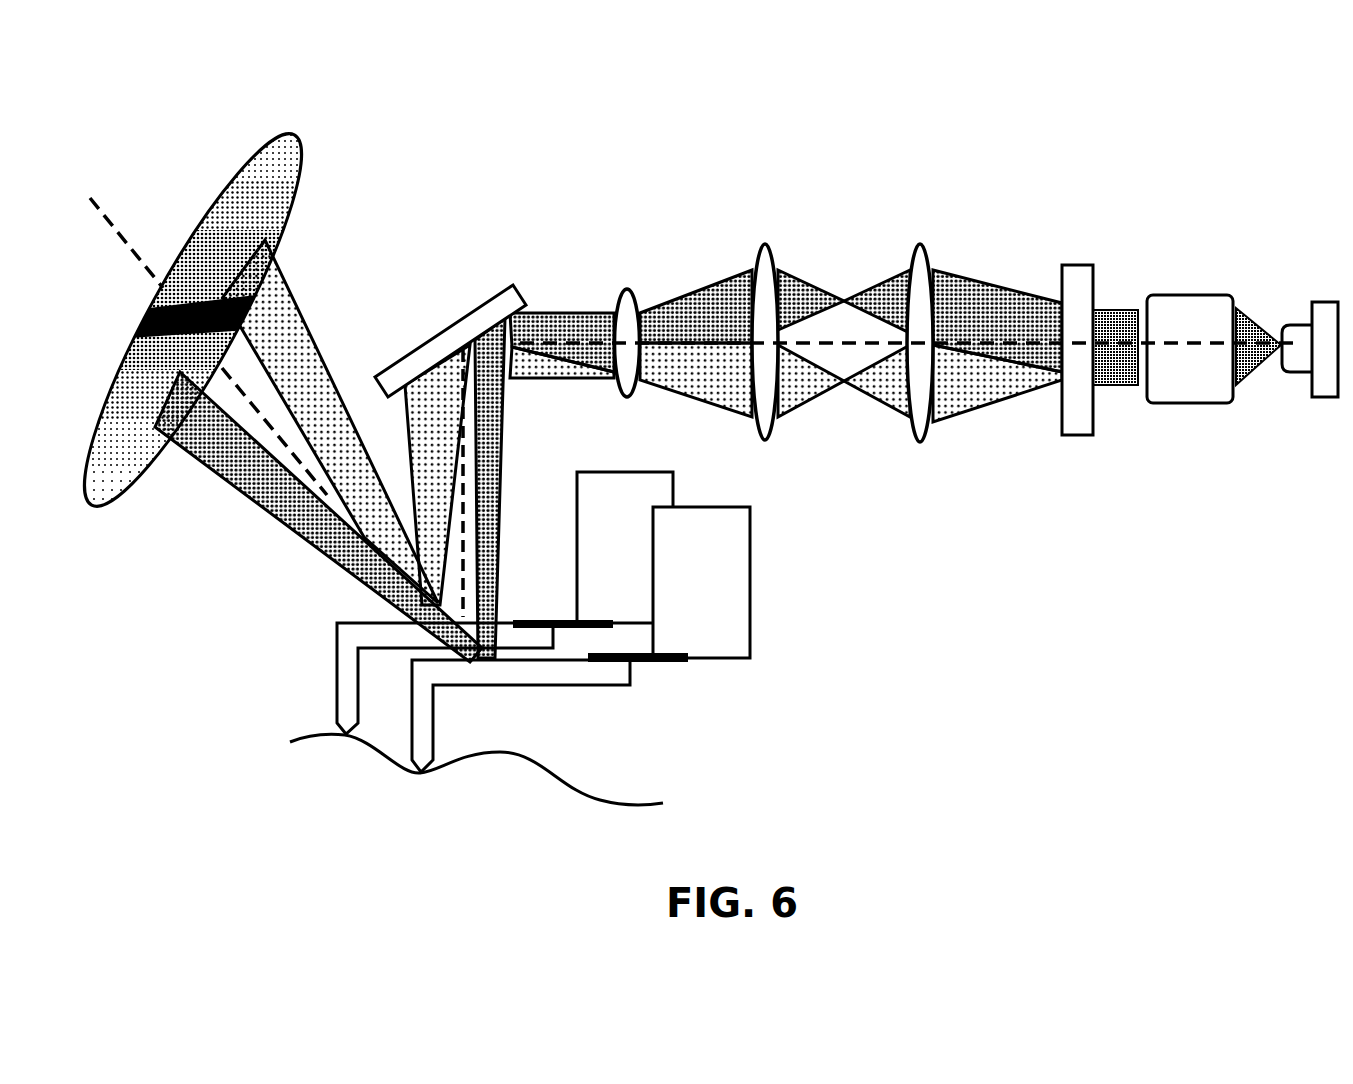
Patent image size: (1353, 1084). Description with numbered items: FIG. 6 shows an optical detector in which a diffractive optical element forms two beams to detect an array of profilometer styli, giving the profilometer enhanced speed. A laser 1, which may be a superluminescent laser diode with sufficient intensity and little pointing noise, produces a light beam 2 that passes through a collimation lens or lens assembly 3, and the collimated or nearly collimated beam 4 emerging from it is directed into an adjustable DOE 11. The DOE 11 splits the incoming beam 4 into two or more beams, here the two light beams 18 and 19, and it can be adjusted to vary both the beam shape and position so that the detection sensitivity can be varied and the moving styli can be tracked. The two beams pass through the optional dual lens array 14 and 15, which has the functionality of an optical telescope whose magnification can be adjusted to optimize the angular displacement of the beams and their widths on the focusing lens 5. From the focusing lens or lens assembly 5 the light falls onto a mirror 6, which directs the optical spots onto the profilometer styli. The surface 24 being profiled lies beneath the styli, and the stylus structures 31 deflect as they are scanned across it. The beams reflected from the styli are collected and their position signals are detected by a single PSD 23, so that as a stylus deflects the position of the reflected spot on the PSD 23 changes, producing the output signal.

The laser 1 is at (1327, 400).
The light beam 2 is at (1263, 378).
The collimation lens or lens assembly 3 is at (1203, 290).
The collimated beam 4 is at (1120, 305).
The focusing lens or lens assembly 5 is at (627, 283).
The mirror 6 is at (453, 315).
The adjustable DOE 11 is at (1077, 262).
The dual lens array lens 14 is at (922, 243).
The dual lens array lens 15 is at (763, 240).
The light beam 18 is at (998, 281).
The light beam 19 is at (958, 422).
The single PSD 23 is at (298, 134).
The sample surface 24 is at (643, 788).
The probe holders 31 is at (682, 492).